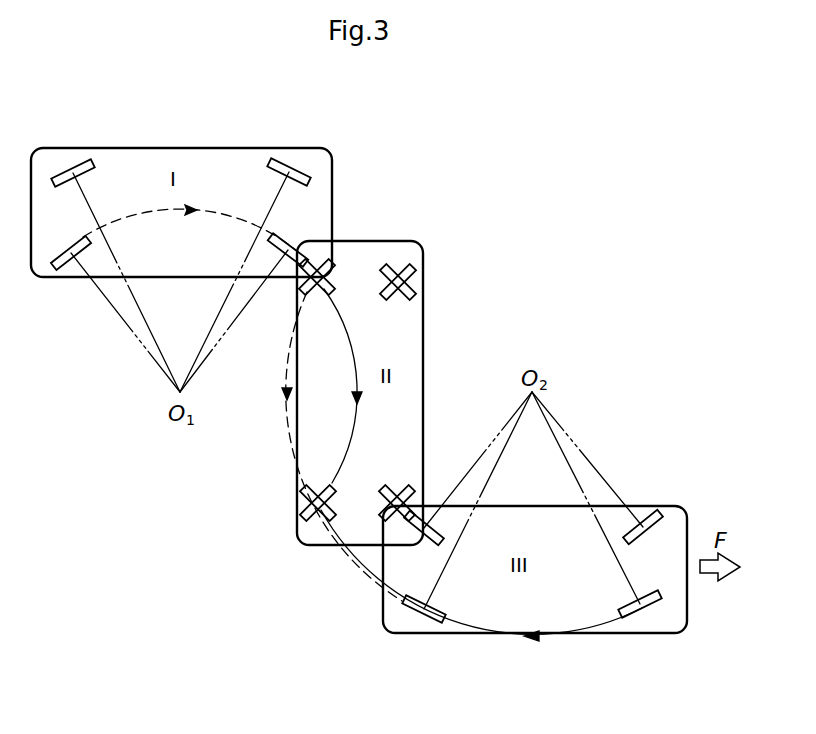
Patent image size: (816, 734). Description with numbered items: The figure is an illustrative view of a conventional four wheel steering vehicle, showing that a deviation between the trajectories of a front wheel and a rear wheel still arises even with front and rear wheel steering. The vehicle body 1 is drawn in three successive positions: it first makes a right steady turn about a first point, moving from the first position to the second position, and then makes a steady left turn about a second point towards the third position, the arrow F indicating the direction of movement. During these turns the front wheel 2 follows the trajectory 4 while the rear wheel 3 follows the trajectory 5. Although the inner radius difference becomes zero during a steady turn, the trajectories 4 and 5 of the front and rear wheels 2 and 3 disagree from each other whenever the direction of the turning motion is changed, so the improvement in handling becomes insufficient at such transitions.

The vehicle body 1 is at (324, 151).
The front wheel 2 is at (280, 238).
The rear wheel 3 is at (69, 276).
The trajectory of front wheel 4 is at (357, 437).
The trajectory of rear wheel 5 is at (160, 216).